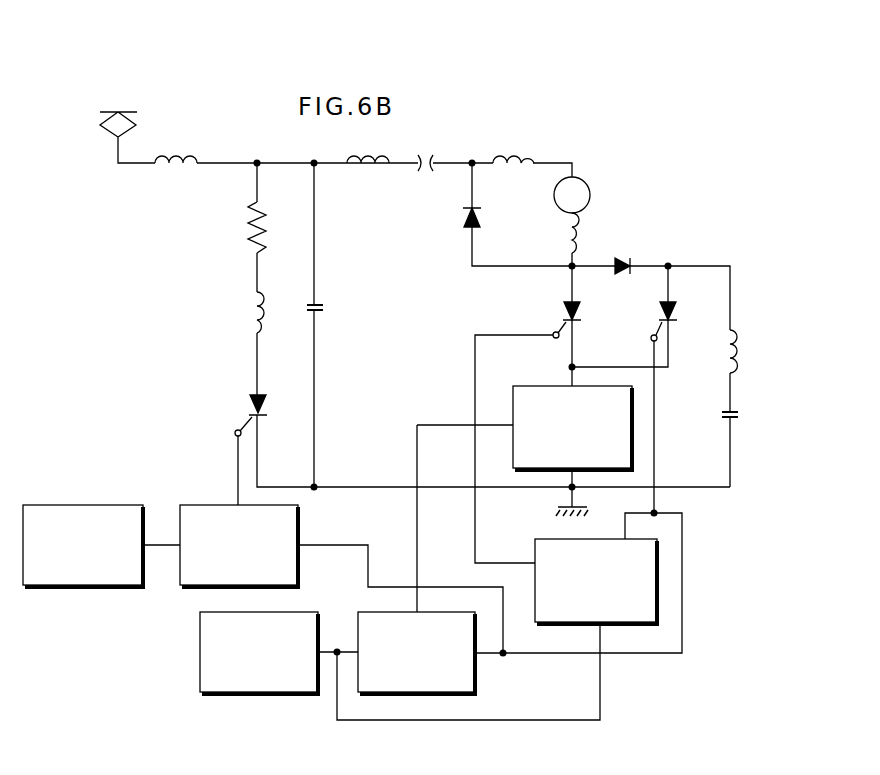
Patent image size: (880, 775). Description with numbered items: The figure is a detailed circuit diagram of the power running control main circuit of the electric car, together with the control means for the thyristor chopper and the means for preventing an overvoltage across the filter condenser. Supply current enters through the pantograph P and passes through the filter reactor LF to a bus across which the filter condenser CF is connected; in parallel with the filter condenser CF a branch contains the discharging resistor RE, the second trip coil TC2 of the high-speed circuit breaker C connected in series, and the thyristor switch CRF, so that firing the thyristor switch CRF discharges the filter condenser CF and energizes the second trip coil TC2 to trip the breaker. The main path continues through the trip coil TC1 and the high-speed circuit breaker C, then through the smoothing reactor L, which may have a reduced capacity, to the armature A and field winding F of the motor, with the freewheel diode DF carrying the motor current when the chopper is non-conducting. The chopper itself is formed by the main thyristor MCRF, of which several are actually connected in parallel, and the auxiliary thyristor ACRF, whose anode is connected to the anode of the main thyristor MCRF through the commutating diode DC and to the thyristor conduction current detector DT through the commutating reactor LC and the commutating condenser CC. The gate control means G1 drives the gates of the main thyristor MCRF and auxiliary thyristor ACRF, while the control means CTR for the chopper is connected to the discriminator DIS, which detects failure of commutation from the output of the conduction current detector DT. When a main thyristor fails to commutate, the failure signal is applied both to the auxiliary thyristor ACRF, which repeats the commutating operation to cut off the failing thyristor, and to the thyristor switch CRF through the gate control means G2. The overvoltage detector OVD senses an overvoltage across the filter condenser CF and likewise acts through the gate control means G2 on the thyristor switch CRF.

The pantograph P is at (90, 127).
The filter reactor LF is at (177, 149).
The discharging resistor RE is at (247, 226).
The trip coil TC1 is at (377, 170).
The high-speed circuit breaker C is at (410, 178).
The second trip coil TC2 is at (253, 312).
The filter condenser CF is at (327, 306).
The thyristor switch CRF is at (238, 406).
The freewheel diode DF is at (480, 235).
The smoothing reactor L is at (513, 178).
The armature A is at (592, 195).
The field winding F is at (585, 231).
The commutating diode DC is at (621, 251).
The main thyristor MCRF is at (557, 310).
The auxiliary thyristor ACRF is at (658, 316).
The commutating reactor LC is at (745, 352).
The commutating condenser CC is at (745, 417).
The thyristor conduction current detector DT is at (636, 428).
The overvoltage detector OVD is at (80, 594).
The gate control means G2 is at (304, 572).
The control means CTR is at (193, 660).
The discriminator DIS is at (485, 690).
The gate control means G1 is at (663, 580).